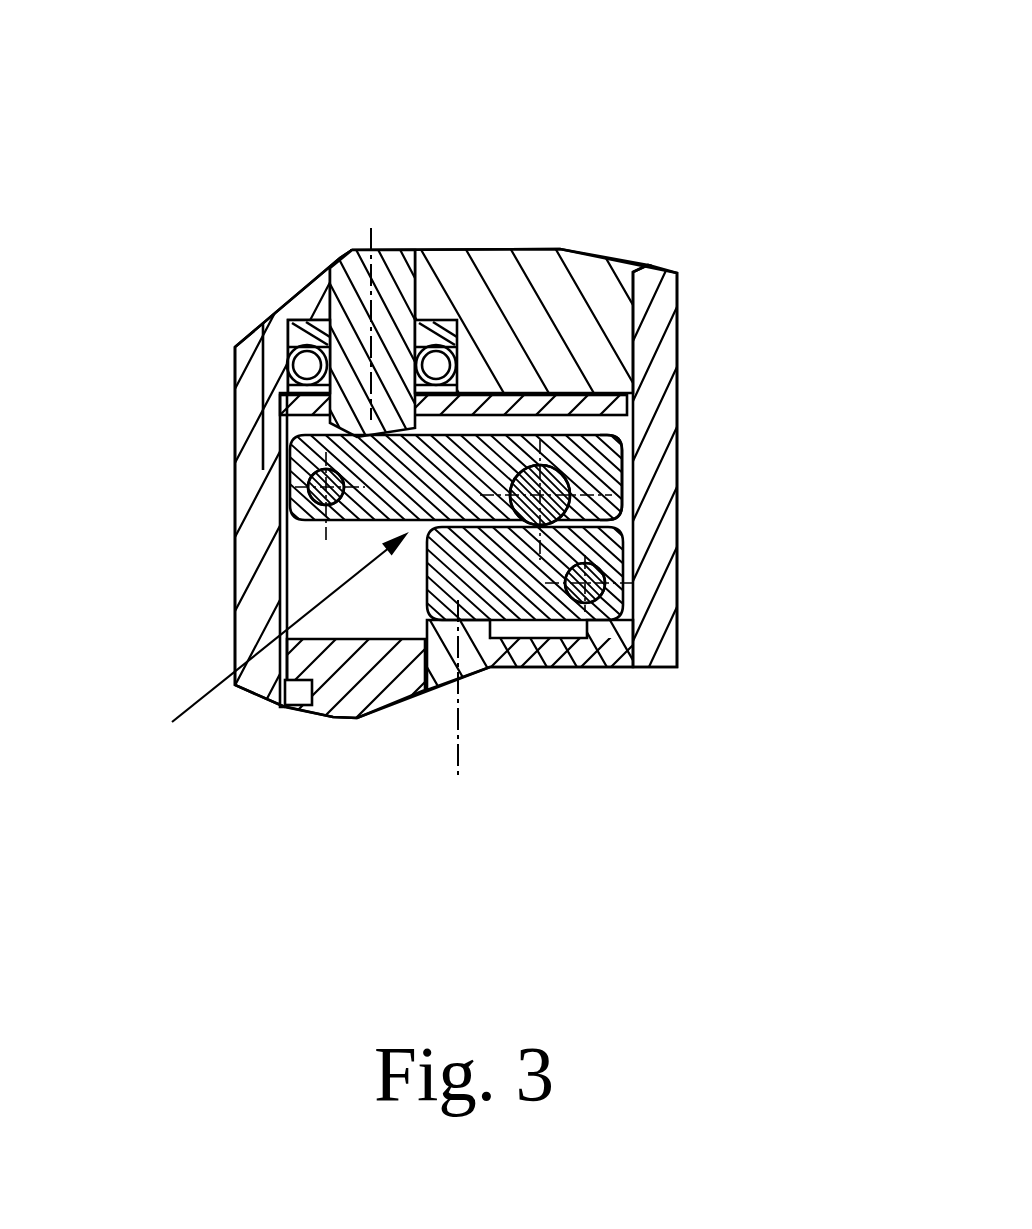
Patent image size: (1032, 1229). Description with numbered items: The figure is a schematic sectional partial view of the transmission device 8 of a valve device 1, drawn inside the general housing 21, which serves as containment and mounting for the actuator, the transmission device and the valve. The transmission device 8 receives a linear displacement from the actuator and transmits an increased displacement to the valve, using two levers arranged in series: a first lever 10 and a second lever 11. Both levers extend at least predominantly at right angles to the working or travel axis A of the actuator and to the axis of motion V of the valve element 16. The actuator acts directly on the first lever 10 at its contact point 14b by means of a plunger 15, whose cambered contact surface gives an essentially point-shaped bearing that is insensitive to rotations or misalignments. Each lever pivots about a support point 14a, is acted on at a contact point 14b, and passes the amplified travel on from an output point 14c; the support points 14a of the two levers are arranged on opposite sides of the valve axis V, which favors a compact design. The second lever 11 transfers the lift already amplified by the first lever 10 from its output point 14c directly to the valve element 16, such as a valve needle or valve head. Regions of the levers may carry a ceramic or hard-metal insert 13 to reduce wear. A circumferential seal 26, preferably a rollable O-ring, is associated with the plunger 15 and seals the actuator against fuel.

The valve device 1 is at (233, 230).
The transmission device 8 is at (275, 649).
The first lever 10 is at (476, 435).
The second lever 11 is at (533, 623).
The insert 13 is at (627, 445).
The support point 14a is at (310, 490).
The contact point 14b is at (365, 437).
The output point 14c is at (605, 512).
The plunger 15 is at (405, 250).
The valve element 16 is at (473, 663).
The housing 21 is at (665, 343).
The circumferential seal 26 is at (298, 365).
The working axis A is at (350, 262).
The axis of motion V is at (458, 735).